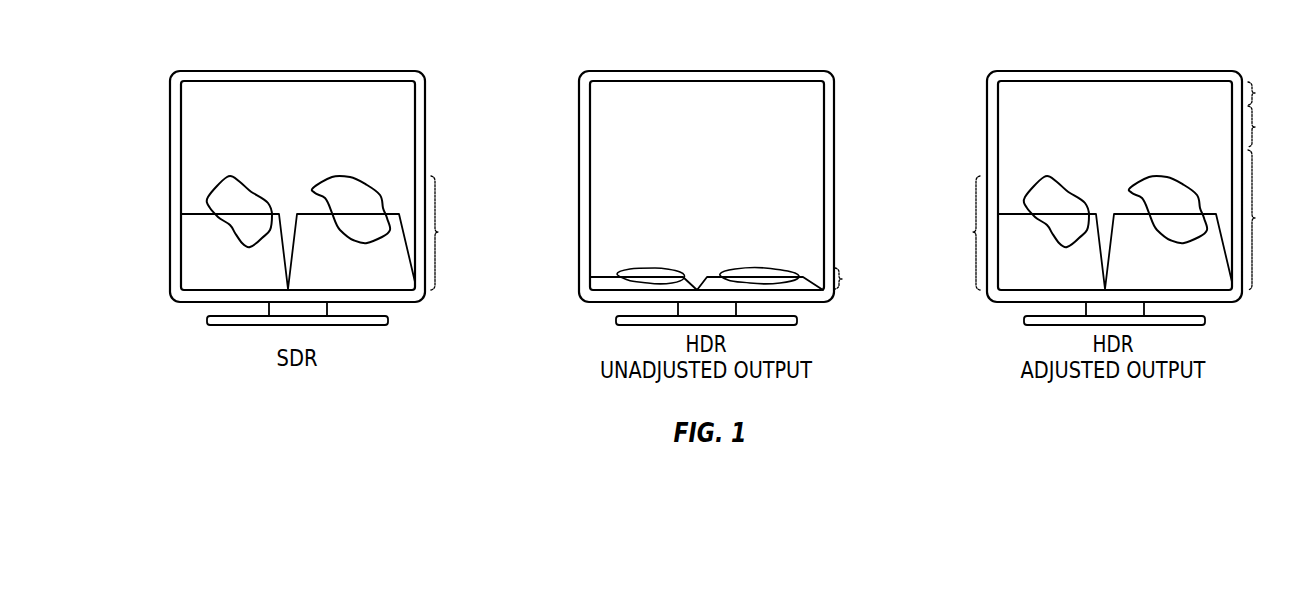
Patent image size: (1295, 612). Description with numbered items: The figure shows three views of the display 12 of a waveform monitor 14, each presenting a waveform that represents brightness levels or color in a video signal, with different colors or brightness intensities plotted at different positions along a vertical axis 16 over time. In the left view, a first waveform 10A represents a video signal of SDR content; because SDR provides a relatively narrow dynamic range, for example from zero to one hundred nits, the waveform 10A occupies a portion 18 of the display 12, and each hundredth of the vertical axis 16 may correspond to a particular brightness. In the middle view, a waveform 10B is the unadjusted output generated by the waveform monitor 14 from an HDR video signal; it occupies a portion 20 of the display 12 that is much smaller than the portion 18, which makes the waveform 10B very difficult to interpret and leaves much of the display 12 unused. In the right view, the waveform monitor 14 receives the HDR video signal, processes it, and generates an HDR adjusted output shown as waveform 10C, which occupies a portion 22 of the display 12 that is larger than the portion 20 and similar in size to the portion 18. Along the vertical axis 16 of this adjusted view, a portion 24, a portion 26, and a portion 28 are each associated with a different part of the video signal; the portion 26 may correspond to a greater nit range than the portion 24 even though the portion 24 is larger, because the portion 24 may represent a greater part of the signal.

The first waveform 10A is at (348, 148).
The waveform 10B is at (700, 244).
The waveform 10C is at (1145, 148).
The display 12 is at (178, 133).
The waveform monitor 14 is at (297, 71).
The vertical axis 16 is at (438, 232).
The portion 18 is at (181, 194).
The portion 20 is at (843, 278).
The portion 22 is at (975, 232).
The portion 24 is at (1254, 219).
The portion 26 is at (1254, 128).
The portion 28 is at (1254, 93).